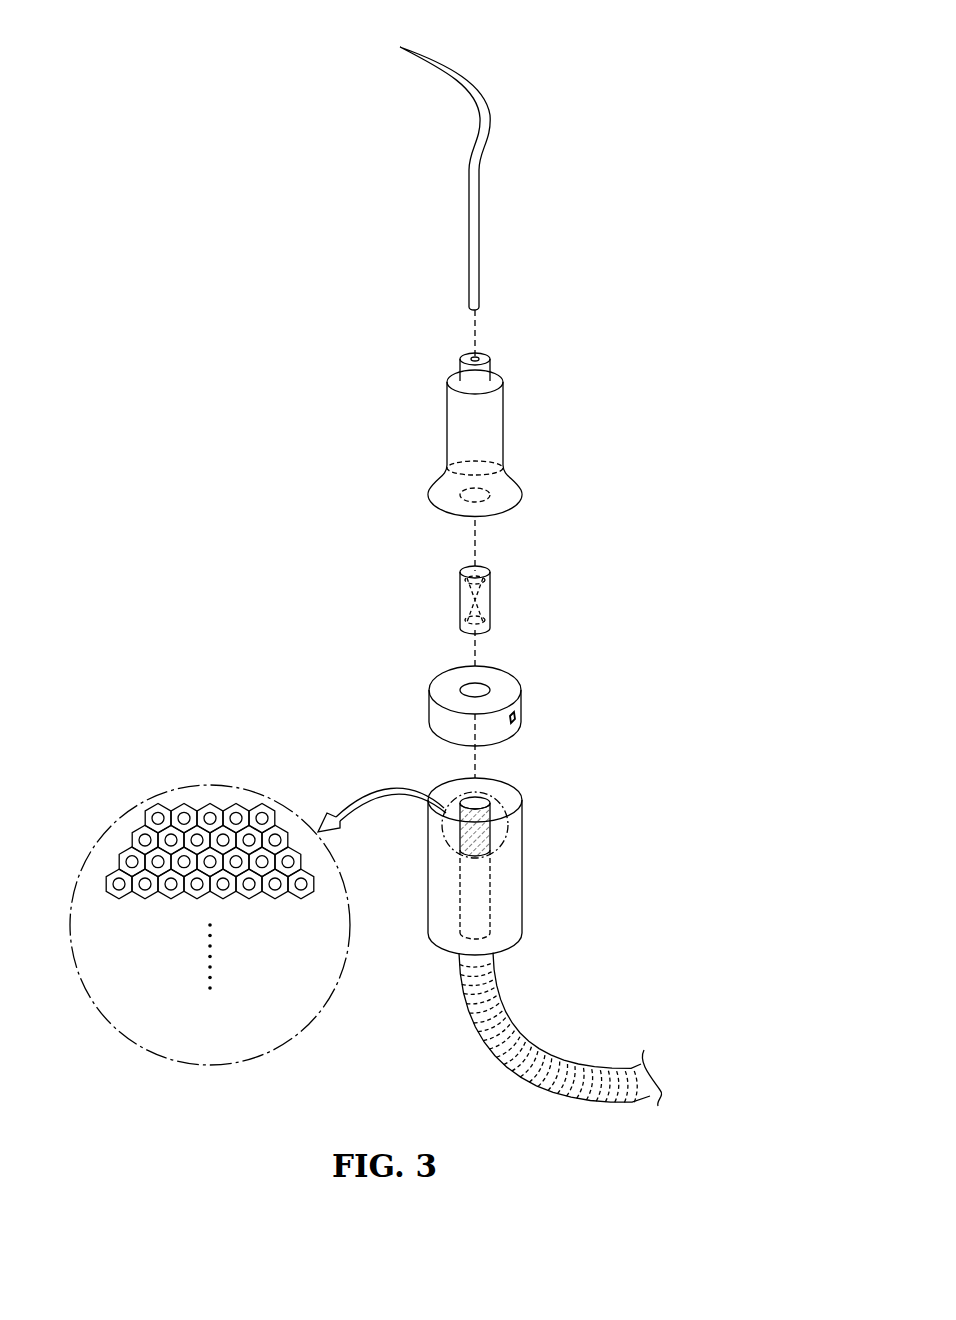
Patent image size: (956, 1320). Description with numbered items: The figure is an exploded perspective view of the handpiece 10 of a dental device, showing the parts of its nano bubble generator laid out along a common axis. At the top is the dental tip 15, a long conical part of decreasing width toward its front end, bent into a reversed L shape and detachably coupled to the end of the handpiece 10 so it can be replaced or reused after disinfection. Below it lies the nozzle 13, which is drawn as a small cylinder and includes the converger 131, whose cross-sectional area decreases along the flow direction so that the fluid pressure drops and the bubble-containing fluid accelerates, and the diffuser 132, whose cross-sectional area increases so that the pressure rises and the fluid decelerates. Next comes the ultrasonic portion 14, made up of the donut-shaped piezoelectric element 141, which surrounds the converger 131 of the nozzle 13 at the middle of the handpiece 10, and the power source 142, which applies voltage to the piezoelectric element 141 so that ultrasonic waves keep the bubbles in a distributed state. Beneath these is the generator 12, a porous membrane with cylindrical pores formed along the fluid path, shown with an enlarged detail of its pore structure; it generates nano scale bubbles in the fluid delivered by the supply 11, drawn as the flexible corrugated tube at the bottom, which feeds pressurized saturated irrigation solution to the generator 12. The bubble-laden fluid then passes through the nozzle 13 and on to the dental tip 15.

The handpiece 10 is at (540, 345).
The supply 11 is at (513, 1028).
The generator 12 is at (482, 837).
The nozzle 13 is at (534, 601).
The converger 131 is at (516, 625).
The diffuser 132 is at (488, 578).
The ultrasonic portion 14 is at (530, 707).
The piezoelectric element 141 is at (503, 731).
The power source 142 is at (517, 713).
The dental tip 15 is at (490, 102).